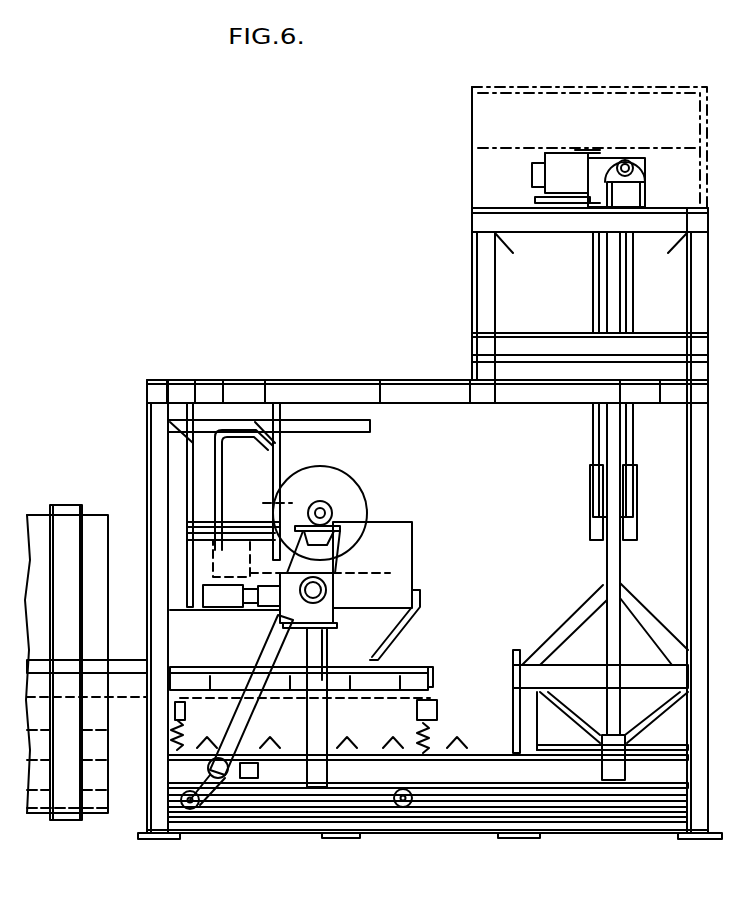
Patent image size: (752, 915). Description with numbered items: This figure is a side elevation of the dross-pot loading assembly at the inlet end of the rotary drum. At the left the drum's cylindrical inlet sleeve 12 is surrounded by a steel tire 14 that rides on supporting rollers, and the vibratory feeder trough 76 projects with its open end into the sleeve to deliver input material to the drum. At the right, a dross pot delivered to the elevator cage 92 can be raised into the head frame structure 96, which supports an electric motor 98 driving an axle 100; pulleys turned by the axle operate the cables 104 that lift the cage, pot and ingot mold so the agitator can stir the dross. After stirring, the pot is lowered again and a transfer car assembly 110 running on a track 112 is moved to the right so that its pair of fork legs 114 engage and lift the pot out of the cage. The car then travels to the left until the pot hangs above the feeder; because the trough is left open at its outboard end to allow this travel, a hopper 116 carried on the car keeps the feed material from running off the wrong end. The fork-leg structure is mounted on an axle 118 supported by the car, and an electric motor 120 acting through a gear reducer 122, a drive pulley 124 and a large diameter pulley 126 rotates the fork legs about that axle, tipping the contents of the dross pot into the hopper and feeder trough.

The cylindrical inlet sleeve 12 is at (98, 822).
The steel tire 14 is at (66, 505).
The trough 76 is at (128, 660).
The elevator cage 92 is at (612, 590).
The head frame structure 96 is at (708, 210).
The electric motor 98 is at (562, 168).
The axle 100 is at (625, 168).
The cables 104 is at (593, 280).
The transfer car assembly 110 is at (303, 772).
The track 112 is at (472, 803).
The fork legs 114 is at (383, 572).
The hopper 116 is at (383, 653).
The axle 118 is at (326, 508).
The electric motor 120 is at (227, 606).
The gear reducer 122 is at (383, 633).
The drive pulley 124 is at (330, 598).
The large diameter pulley 126 is at (366, 505).